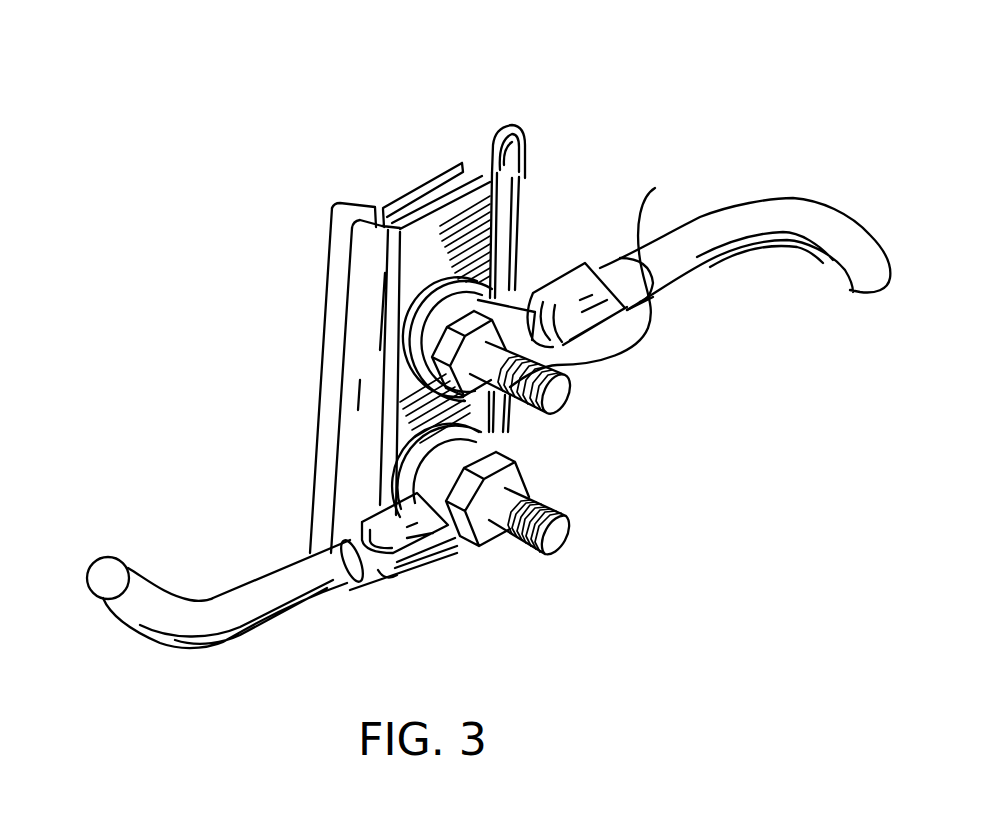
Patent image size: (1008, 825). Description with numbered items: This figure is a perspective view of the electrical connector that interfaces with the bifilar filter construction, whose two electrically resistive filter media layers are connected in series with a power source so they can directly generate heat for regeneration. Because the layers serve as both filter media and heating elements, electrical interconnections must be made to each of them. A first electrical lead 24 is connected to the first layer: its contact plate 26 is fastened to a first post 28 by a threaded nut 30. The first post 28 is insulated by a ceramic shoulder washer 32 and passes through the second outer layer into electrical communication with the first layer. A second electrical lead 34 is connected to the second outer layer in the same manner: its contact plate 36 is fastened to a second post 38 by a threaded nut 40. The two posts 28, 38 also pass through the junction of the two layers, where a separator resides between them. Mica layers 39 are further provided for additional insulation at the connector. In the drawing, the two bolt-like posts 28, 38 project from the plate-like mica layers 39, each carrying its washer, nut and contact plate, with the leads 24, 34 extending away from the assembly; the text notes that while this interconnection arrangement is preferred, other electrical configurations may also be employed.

The first electrical lead 24 is at (170, 618).
The contact plate 26 is at (503, 438).
The first post 28 is at (540, 512).
The threaded nut 30 is at (463, 497).
The ceramic shoulder washer 32 is at (407, 452).
The second electrical lead 34 is at (750, 223).
The contact plate 36 is at (521, 218).
The second post 38 is at (582, 274).
The mica layers 39 is at (450, 208).
The threaded nut 40 is at (468, 323).